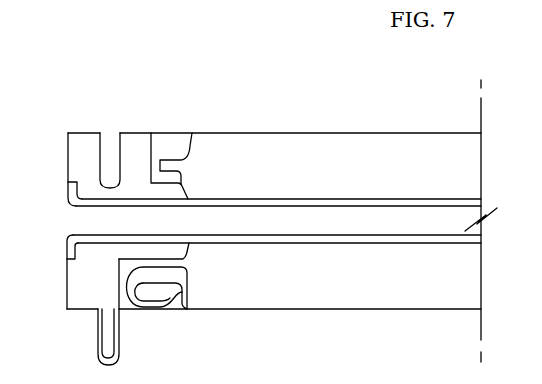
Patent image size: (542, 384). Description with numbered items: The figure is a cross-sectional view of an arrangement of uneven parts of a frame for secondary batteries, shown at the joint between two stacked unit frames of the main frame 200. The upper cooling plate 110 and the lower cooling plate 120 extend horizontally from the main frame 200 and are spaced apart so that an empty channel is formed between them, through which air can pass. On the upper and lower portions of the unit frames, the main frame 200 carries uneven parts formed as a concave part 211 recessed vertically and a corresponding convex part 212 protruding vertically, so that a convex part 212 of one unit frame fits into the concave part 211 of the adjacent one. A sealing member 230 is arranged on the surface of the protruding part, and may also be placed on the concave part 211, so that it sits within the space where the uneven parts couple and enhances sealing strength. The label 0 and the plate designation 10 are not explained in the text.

The plate 10 is at (312, 147).
The main frame 200 is at (107, 138).
The concave part 211 is at (109, 176).
The upper cooling plate 110 is at (70, 183).
The lower cooling plate 120 is at (68, 253).
The sealing member 230 is at (97, 323).
The convex part 212 is at (114, 343).
The assembly 0 is at (82, 221).